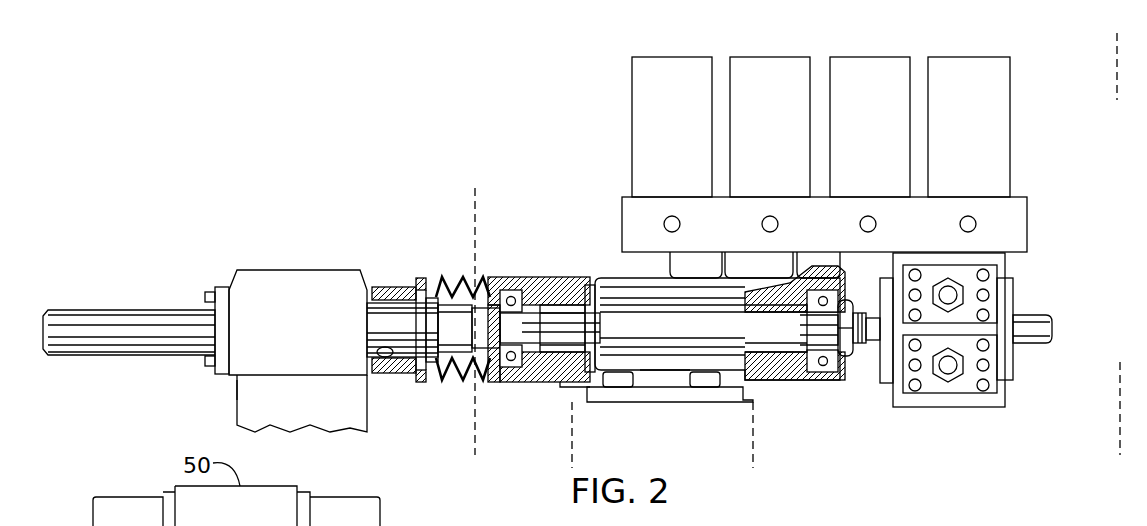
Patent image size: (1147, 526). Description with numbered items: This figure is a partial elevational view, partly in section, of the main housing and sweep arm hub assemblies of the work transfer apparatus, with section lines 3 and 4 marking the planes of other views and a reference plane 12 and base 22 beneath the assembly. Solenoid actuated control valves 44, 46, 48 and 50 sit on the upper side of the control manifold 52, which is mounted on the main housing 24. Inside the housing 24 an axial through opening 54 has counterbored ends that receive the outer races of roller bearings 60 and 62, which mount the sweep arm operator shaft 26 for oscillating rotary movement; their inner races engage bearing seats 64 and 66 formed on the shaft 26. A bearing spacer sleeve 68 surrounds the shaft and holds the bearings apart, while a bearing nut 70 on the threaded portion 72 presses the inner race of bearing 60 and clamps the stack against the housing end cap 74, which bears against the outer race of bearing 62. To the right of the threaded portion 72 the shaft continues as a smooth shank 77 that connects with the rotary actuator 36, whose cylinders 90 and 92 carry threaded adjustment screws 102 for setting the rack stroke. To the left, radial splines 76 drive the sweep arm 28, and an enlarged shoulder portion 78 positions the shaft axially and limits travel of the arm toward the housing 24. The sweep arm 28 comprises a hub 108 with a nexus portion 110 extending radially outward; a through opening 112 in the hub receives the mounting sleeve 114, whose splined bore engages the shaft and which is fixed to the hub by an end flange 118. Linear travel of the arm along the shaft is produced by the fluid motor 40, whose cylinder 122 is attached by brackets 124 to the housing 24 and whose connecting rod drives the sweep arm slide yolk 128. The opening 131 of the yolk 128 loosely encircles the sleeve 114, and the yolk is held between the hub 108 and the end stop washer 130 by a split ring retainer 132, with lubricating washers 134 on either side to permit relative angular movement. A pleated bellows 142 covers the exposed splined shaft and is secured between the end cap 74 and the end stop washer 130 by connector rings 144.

The floor plane 12 is at (755, 448).
The base plate 22 is at (687, 400).
The main housing 24 is at (617, 278).
The sweep arm operator shaft 26 is at (580, 323).
The sweep arm 28 is at (226, 390).
The rotary actuator 36 is at (1015, 298).
The fluid motor 40 is at (663, 375).
The solenoid actuated control valve 44 is at (692, 57).
The solenoid actuated control valve 46 is at (792, 57).
The solenoid actuated control valve 48 is at (892, 57).
The solenoid actuated control valve 50 is at (988, 57).
The control manifold 52 is at (622, 222).
The axial through opening 54 is at (572, 290).
The roller bearing 60 is at (838, 380).
The roller bearing 62 is at (520, 285).
The bearing seat 64 is at (548, 378).
The bearing seat 66 is at (866, 315).
The bearing spacer sleeve 68 is at (782, 355).
The bearing nut 70 is at (849, 358).
The threaded portion 72 is at (857, 358).
The housing end cap 74 is at (496, 385).
The radial splines 76 is at (110, 310).
The smooth shank 77 is at (1053, 330).
The shoulder portion 78 is at (462, 280).
The cylinder 90 is at (1000, 268).
The cylinder 92 is at (1000, 390).
The threaded adjustment screw 102 is at (950, 374).
The hub 108 is at (320, 270).
The nexus portion 110 is at (362, 408).
The through opening 112 is at (362, 300).
The mounting sleeve 114 is at (360, 335).
The end flange 118 is at (222, 287).
The cylinder 122 is at (697, 333).
The brackets 124 is at (993, 522).
The sweep arm slide yolk 128 is at (408, 278).
The end stop washer 130 is at (425, 378).
The opening 131 is at (365, 372).
The split ring retainer 132 is at (372, 320).
The lubricating washers 134 is at (385, 285).
The pleated bellows 142 is at (460, 385).
The connector rings 144 is at (498, 280).
The section line 3- 3 is at (1117, 38).
The section line 4- 4 is at (475, 195).